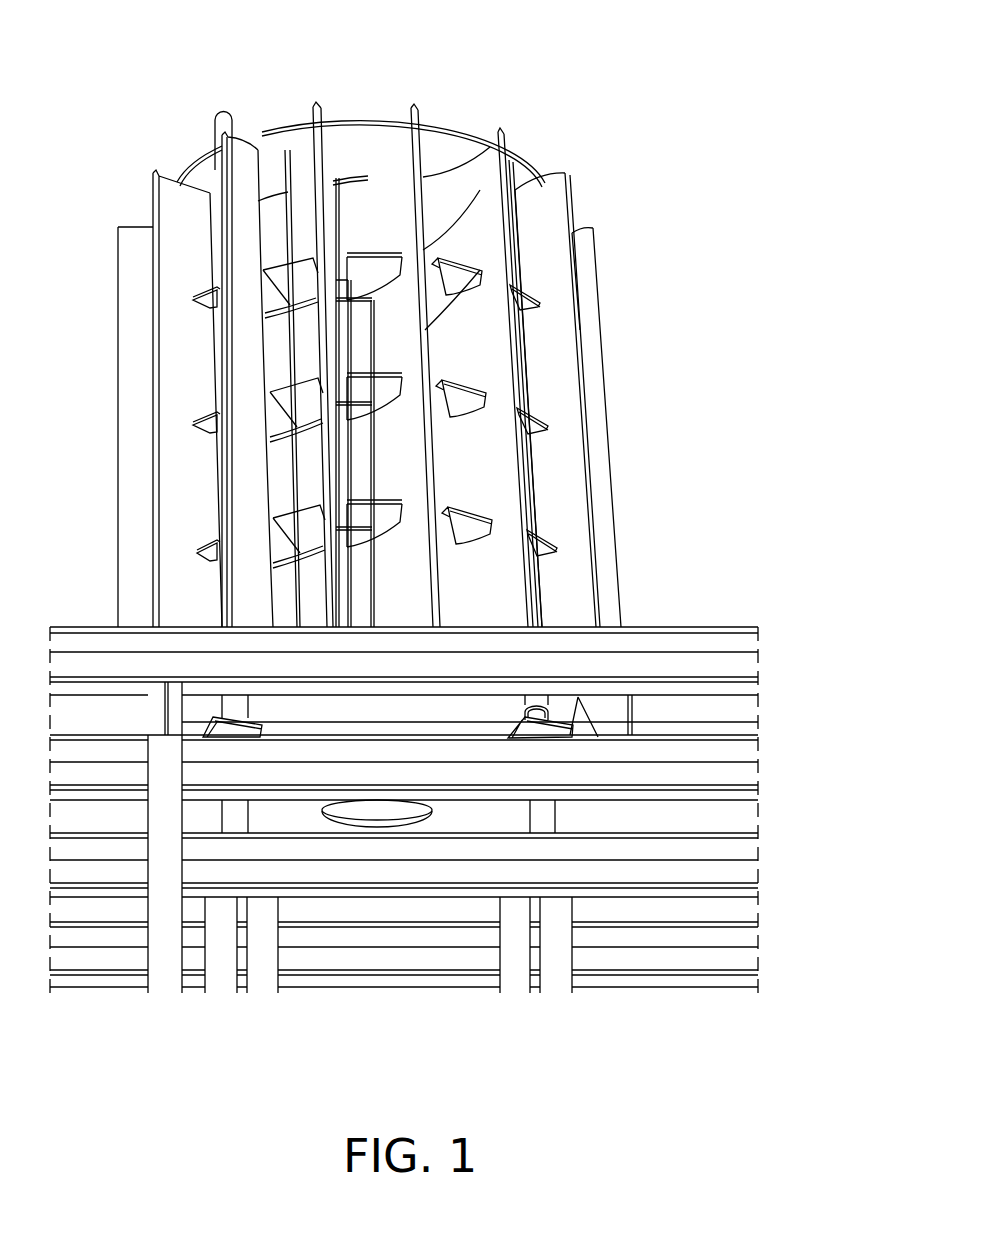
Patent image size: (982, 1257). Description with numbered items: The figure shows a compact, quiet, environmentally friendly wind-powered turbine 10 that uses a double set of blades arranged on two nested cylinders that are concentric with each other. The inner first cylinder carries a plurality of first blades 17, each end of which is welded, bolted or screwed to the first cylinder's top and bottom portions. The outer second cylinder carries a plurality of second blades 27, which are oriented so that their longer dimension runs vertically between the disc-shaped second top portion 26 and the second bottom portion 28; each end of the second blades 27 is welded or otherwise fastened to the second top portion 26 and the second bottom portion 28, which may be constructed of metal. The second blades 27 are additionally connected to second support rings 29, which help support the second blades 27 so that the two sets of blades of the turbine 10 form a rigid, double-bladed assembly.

The wind-powered turbine 10 is at (645, 208).
The first blades 17 is at (288, 215).
The second top portion 26 is at (350, 118).
The second blades 27 is at (596, 405).
The second bottom portion 28 is at (563, 712).
The second support rings 29 is at (380, 250).